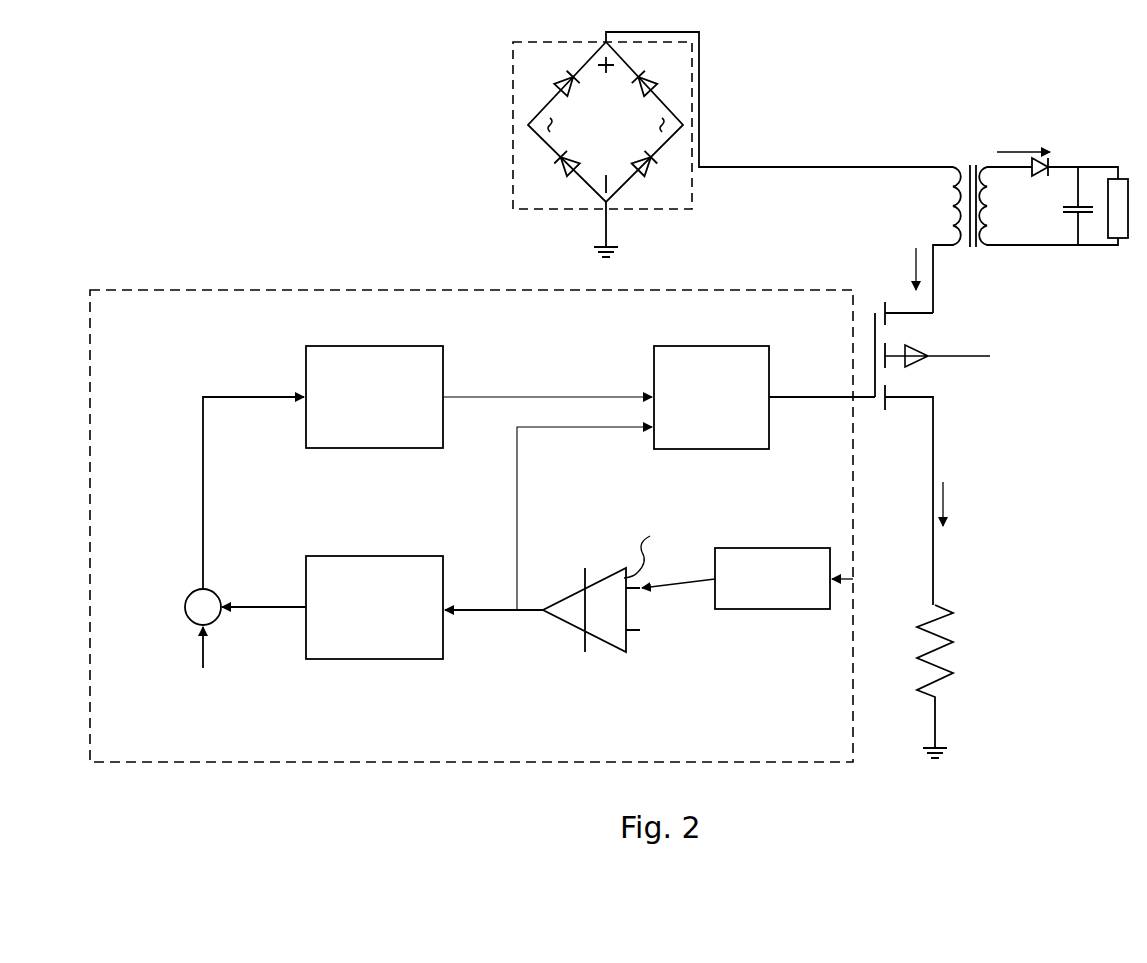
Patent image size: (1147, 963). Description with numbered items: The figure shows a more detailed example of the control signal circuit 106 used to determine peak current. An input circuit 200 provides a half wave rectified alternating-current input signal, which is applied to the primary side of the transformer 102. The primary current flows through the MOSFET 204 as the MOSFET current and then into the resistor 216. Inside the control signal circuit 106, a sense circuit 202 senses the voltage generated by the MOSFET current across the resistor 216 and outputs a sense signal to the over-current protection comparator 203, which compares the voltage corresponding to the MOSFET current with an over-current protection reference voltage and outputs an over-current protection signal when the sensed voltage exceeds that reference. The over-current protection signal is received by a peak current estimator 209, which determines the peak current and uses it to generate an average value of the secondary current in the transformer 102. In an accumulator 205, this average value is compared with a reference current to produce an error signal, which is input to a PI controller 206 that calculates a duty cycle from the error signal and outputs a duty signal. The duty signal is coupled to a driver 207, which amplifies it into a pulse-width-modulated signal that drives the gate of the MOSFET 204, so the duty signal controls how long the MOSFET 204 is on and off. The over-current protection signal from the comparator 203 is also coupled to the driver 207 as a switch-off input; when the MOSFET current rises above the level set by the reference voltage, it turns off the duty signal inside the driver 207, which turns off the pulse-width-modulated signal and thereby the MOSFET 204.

The input circuit 200 is at (512, 124).
The transformer 102 is at (1010, 223).
The MOSFET 204 is at (943, 453).
The resistor 216 is at (952, 606).
The control signal circuit 106 is at (404, 289).
The proportional-integral (PI) controller 206 is at (479, 397).
The driver 207 is at (696, 478).
The peak current estimator 209 is at (332, 607).
The accumulator 205 is at (184, 606).
The OCP comparator 203 is at (562, 622).
The sense circuit 202 is at (760, 612).